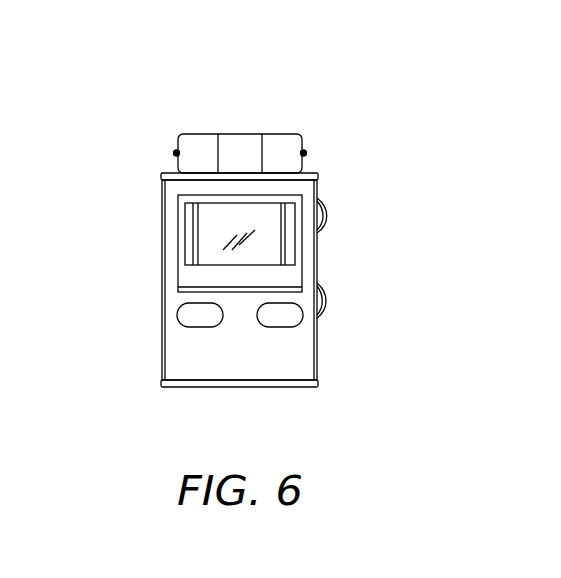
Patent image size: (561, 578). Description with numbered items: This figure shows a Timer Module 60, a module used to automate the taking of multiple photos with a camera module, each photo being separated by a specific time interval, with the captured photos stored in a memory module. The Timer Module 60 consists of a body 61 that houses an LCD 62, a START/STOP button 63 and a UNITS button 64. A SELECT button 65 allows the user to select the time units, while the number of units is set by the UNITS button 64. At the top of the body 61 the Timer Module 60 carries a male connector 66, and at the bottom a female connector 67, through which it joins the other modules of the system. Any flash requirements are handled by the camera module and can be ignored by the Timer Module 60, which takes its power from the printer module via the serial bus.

The Timer Module 60 is at (342, 106).
The body 61 is at (317, 368).
The LCD 62 is at (208, 247).
The START/STOP button 63 is at (285, 314).
The UNITS button 64 is at (318, 203).
The SELECT button 65 is at (188, 313).
The male connector 66 is at (195, 135).
The female connector 67 is at (192, 387).